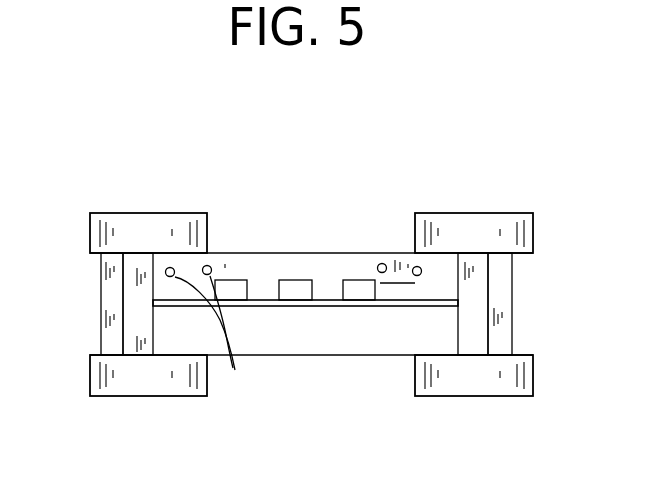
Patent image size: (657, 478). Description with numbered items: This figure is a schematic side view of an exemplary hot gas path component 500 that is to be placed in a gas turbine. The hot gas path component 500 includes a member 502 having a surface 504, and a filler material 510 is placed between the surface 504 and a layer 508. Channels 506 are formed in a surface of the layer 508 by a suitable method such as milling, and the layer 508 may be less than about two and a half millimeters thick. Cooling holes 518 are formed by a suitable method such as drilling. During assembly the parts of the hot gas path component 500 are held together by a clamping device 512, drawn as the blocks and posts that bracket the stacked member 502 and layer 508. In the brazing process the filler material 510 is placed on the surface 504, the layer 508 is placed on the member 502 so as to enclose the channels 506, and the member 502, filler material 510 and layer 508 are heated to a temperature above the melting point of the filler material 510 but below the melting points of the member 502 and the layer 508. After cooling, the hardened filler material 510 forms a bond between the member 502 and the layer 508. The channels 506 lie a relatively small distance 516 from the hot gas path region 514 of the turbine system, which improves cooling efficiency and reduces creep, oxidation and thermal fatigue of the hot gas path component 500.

The hot gas path component 500 is at (366, 183).
The member 502 is at (400, 347).
The surface 504 is at (443, 307).
The channels 506 is at (360, 285).
The layer 508 is at (187, 270).
The filler material 510 is at (162, 306).
The clamping device 512 is at (501, 213).
The hot gas path region 514 is at (287, 187).
The distance 516 is at (398, 312).
The cooling holes 518 is at (224, 336).